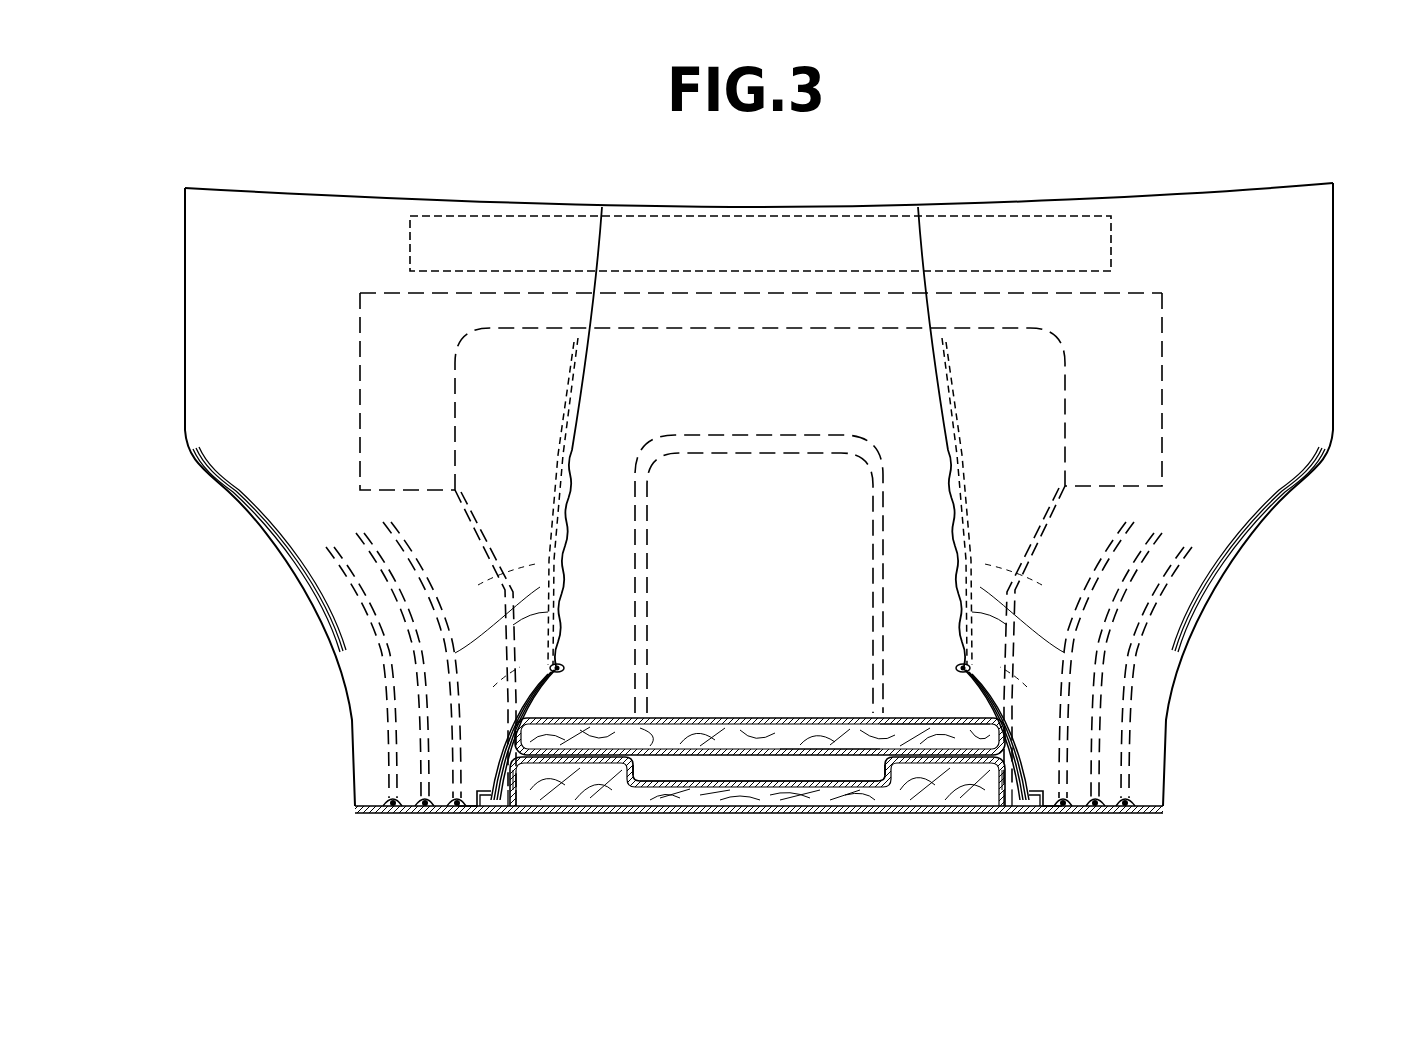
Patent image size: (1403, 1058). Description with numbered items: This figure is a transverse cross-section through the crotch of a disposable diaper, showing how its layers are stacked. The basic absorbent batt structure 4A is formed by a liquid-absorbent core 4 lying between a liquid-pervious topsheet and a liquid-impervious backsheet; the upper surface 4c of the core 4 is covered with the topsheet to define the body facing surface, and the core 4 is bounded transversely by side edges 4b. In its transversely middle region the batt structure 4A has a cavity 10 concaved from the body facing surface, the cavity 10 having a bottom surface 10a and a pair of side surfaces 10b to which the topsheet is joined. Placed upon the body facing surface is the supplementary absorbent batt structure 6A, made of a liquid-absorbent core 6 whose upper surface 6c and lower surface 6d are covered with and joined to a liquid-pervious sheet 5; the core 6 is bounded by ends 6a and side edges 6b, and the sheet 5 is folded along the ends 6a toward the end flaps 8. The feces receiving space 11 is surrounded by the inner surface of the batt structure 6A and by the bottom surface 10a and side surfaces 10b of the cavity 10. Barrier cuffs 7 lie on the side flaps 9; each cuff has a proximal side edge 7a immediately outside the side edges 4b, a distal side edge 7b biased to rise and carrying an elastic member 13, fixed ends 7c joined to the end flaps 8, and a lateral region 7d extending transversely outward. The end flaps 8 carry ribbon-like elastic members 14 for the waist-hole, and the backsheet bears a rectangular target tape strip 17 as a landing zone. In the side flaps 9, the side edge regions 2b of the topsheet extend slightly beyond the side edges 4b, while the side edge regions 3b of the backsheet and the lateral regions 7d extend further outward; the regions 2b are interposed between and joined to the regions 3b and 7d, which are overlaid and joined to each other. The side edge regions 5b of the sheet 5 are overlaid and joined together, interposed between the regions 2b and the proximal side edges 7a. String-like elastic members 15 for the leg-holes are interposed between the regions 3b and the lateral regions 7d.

The ribbon-like elastic members 14 is at (865, 229).
The target tape strip 17 is at (380, 294).
The end flaps 8 is at (718, 291).
The fixed ends 7c is at (555, 290).
The ends 6a is at (788, 343).
The cavity 10 is at (790, 473).
The barrier cuffs 7 is at (527, 487).
The distal side edges 7b is at (548, 532).
The side flaps 9 is at (262, 489).
The elastic members 13 is at (563, 668).
The side edges 6b is at (537, 718).
The liquid-pervious sheet 5 is at (678, 718).
The lower surface 6d is at (710, 717).
The upper surface 6c is at (740, 718).
The feces receiving space 11 is at (826, 720).
The liquid-absorbent core 6 is at (860, 718).
The upper surface 4c is at (900, 718).
The proximal side edges 7a is at (481, 790).
The lateral regions 7d is at (373, 785).
The side edge regions 3b is at (368, 815).
The string-like elastic members 15 is at (457, 814).
The side edge regions 2b is at (485, 815).
The side edge regions 5b is at (497, 815).
The side edges 4b is at (520, 800).
The liquid-absorbent core 4 is at (594, 805).
The side surfaces 10b is at (658, 785).
The bottom surface 10a is at (745, 767).
The supplementary absorbent batt structure 6A is at (771, 755).
The basic absorbent batt structure 4A is at (690, 814).